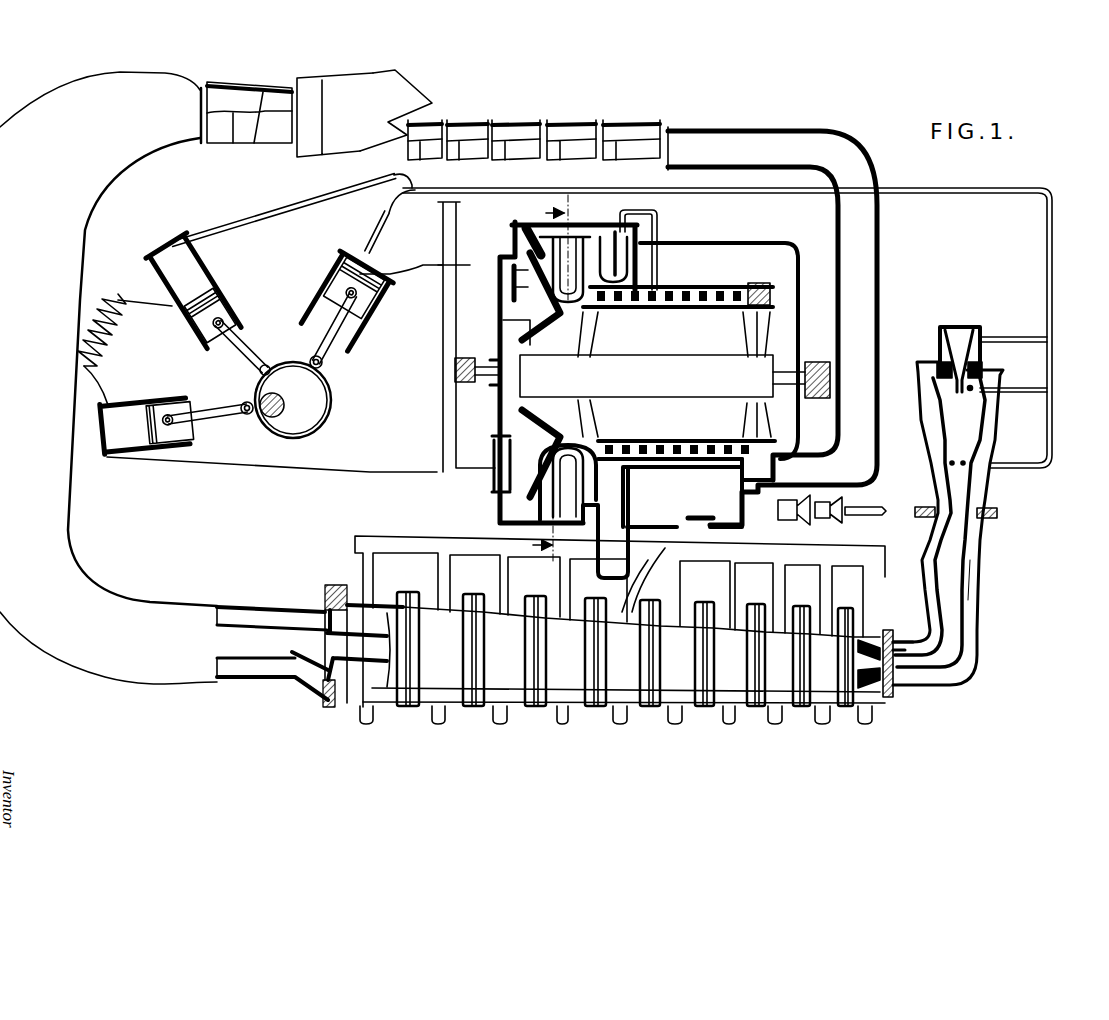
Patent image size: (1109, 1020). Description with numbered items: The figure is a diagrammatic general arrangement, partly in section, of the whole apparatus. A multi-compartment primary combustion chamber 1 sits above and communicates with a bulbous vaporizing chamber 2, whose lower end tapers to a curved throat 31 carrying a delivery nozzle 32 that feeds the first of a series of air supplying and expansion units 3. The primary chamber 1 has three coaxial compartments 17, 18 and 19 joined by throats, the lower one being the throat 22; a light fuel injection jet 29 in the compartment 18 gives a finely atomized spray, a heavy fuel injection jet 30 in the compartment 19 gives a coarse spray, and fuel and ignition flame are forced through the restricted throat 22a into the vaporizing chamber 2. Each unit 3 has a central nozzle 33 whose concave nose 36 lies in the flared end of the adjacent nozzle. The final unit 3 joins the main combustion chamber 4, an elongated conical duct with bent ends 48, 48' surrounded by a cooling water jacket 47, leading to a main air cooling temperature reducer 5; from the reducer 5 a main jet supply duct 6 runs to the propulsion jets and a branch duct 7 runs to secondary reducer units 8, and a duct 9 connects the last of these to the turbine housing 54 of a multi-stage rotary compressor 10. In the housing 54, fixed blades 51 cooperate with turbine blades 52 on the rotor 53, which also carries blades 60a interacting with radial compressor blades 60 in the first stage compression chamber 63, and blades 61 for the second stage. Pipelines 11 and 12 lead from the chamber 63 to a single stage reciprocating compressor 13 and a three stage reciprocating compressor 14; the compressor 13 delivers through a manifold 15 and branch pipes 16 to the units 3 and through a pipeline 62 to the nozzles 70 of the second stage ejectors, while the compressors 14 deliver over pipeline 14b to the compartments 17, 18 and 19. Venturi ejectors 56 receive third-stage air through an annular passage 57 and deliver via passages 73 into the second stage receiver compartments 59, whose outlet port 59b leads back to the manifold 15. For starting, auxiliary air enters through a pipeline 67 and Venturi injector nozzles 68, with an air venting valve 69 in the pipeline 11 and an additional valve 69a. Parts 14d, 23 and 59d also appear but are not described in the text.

The primary combustion chamber 1 is at (996, 417).
The vaporizing chamber 2 is at (978, 592).
The air supplying and expansion units 3 is at (440, 663).
The main combustion chamber 4 is at (148, 612).
The main air cooling temperature reducer 5 is at (258, 136).
The main jet supply duct 6 is at (395, 92).
The branch duct 7 is at (345, 140).
The secondary air cooling temperature reducer units 8 is at (518, 122).
The duct 9 is at (884, 246).
The multi-stage rotary compressor 10 is at (722, 292).
The pipeline 11 is at (417, 270).
The pipeline 12 is at (218, 469).
The single stage reciprocating compressor 13 is at (338, 278).
The three stage reciprocating compressor 14 is at (220, 282).
The pipeline 14b is at (297, 188).
The return spring 14d is at (127, 300).
The manifold 15 is at (465, 540).
The branch pipes 16 is at (428, 574).
The compartment 17 is at (970, 350).
The compartment 18 is at (726, 592).
The compartment 19 is at (958, 486).
The throat 22 is at (958, 451).
The restricted throat 22a is at (962, 507).
The annular passage 23 is at (970, 603).
The light fuel injection jet 29 is at (972, 389).
The heavy fuel injection jet 30 is at (1040, 467).
The curved throat 31 is at (927, 670).
The delivery nozzle 32 is at (863, 670).
The central tube or nozzle 33 is at (325, 670).
The concave nose 36 is at (298, 670).
The cooling water jacket 47 is at (253, 667).
The bent end 48 is at (272, 607).
The bent end 48' is at (100, 129).
The fixed blades 51 is at (614, 316).
The turbine blades 52 is at (700, 290).
The rotor 53 is at (697, 315).
The turbine housing 54 is at (760, 290).
The Venturi type ejectors 56 is at (625, 447).
The annular passage 57 is at (522, 228).
The second stage compartments 59 is at (637, 284).
The outlet port 59b is at (628, 556).
The drain chamber 59d is at (622, 523).
The radial compressor blades 60 is at (526, 288).
The rotor blades 60a is at (526, 276).
The blades 61 is at (512, 246).
The compressed air supply pipeline 62 is at (385, 210).
The first stage compression chamber 63 is at (503, 330).
The pipeline 67 is at (866, 516).
The Venturi injector nozzles 68 is at (793, 522).
The air venting valve 69 is at (441, 234).
The additional valve 69a is at (702, 527).
The nozzles 70 is at (645, 235).
The passages 73 is at (600, 232).